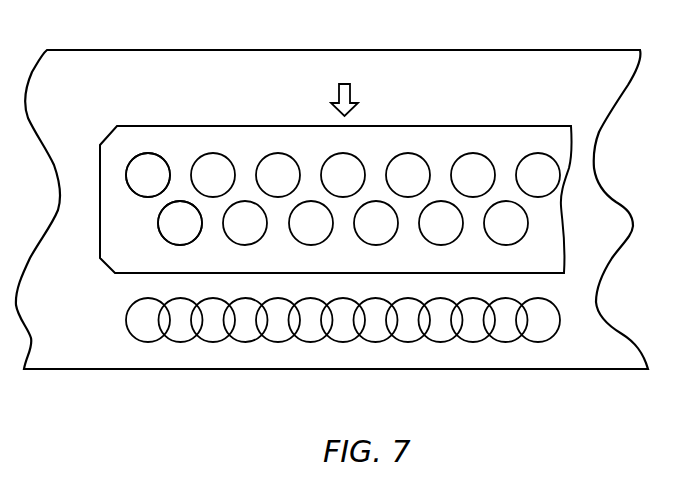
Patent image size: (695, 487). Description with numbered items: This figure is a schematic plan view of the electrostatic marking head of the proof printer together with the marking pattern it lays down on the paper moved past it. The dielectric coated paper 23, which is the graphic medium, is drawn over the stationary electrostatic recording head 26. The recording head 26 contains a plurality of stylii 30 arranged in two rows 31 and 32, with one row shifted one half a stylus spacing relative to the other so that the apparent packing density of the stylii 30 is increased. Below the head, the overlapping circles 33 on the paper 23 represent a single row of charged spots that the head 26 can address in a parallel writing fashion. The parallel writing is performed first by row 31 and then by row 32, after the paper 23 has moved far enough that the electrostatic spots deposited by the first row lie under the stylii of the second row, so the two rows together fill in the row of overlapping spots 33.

The dielectric coated paper 23 is at (548, 56).
The electrostatic recording head 26 is at (505, 136).
The stylii 30 is at (242, 205).
The first row of stylii 31 is at (132, 180).
The second row of stylii 32 is at (164, 232).
The overlapping circles 33 is at (198, 341).